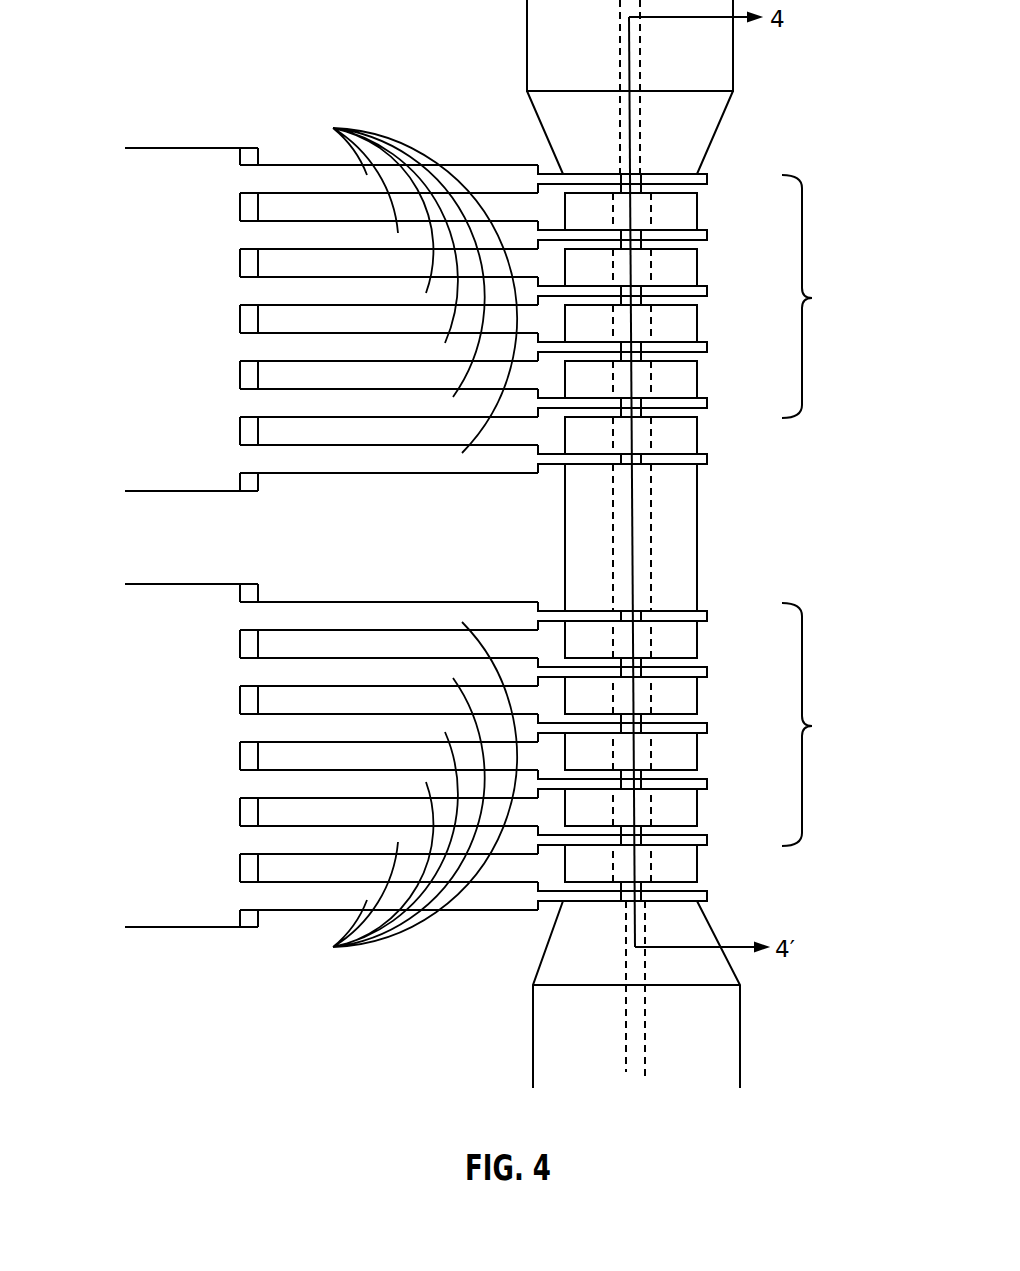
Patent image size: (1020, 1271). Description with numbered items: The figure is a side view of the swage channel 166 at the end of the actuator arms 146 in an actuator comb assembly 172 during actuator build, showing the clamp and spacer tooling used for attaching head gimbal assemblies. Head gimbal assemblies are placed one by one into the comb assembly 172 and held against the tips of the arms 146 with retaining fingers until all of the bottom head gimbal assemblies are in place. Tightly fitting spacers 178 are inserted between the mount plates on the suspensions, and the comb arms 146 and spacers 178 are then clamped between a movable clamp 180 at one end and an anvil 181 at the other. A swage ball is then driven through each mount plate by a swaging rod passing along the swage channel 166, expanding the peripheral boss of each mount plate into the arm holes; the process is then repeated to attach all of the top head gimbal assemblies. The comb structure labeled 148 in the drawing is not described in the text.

The comb electrode plate 148 is at (158, 148).
The actuator arms 146 is at (334, 128).
The spacers 178 is at (698, 214).
The actuator comb assembly 172 is at (820, 510).
The swage channel 166 is at (631, 76).
The movable clamp 180 is at (733, 78).
The anvil 181 is at (742, 1013).